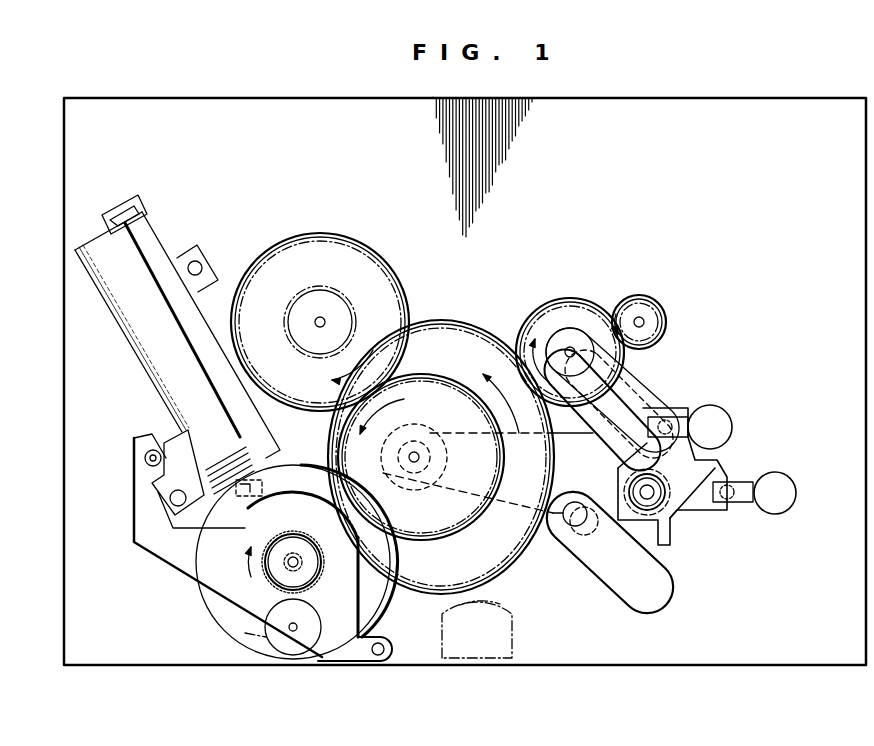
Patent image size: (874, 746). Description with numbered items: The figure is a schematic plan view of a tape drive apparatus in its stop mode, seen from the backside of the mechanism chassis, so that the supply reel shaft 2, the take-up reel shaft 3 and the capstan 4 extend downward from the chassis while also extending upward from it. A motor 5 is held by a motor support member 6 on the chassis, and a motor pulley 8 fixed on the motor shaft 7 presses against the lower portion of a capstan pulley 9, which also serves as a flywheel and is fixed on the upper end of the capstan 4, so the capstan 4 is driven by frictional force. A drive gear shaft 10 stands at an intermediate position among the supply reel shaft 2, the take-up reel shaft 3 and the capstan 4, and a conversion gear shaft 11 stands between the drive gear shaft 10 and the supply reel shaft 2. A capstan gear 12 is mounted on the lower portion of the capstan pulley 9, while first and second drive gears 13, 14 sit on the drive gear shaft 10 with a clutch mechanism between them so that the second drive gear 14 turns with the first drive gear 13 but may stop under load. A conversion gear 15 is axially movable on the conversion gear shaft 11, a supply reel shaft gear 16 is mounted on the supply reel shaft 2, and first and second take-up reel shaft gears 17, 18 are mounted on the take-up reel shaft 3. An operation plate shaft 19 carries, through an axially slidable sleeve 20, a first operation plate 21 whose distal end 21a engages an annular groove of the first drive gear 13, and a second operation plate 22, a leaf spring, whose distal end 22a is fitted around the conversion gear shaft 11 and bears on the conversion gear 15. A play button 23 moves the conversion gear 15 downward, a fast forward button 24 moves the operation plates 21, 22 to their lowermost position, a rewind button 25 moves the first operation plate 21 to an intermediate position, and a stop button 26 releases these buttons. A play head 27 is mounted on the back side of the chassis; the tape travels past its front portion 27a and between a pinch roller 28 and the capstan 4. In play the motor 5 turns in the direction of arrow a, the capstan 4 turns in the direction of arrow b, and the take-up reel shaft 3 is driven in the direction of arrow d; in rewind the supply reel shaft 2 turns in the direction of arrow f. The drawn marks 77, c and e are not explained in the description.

The supply reel shaft 2 is at (641, 320).
The take-up reel shaft 3 is at (320, 322).
The capstan 4 is at (278, 544).
The motor 5 is at (107, 272).
The motor support member 6 is at (155, 238).
The motor shaft 7 is at (238, 448).
The motor pulley 8 is at (238, 528).
The capstan pulley 9 is at (214, 610).
The drive gear shaft 10 is at (415, 456).
The conversion gear shaft 11 is at (571, 346).
The capstan gear 12 is at (328, 570).
The first drive gear 13 is at (476, 567).
The second drive gear 14 is at (463, 510).
The conversion gear 15 is at (543, 318).
The supply reel shaft gear 16 is at (667, 317).
The first take-up reel shaft gear 17 is at (286, 312).
The second take-up reel shaft gear 18 is at (268, 265).
The operation plate shaft 19 is at (662, 497).
The sleeve 20 is at (655, 508).
The first operation plate 21 is at (556, 521).
The distal end of first operation plate 21a is at (424, 486).
The second operation plate 22 is at (725, 463).
The distal end of second operation plate 22a is at (583, 338).
The play button 23 is at (620, 393).
The fast forward button 24 is at (710, 412).
The rewind button 25 is at (782, 480).
The stop button 26 is at (642, 593).
The play head 27 is at (504, 642).
The front portion of play head 27a is at (503, 603).
The pinch roller 28 is at (245, 633).
The support plate 77 is at (147, 517).
The arrow a is at (264, 497).
The arrow b is at (245, 578).
The rotation direction c is at (439, 421).
The arrow d is at (352, 361).
The rotation direction e is at (518, 345).
The arrow f is at (622, 302).